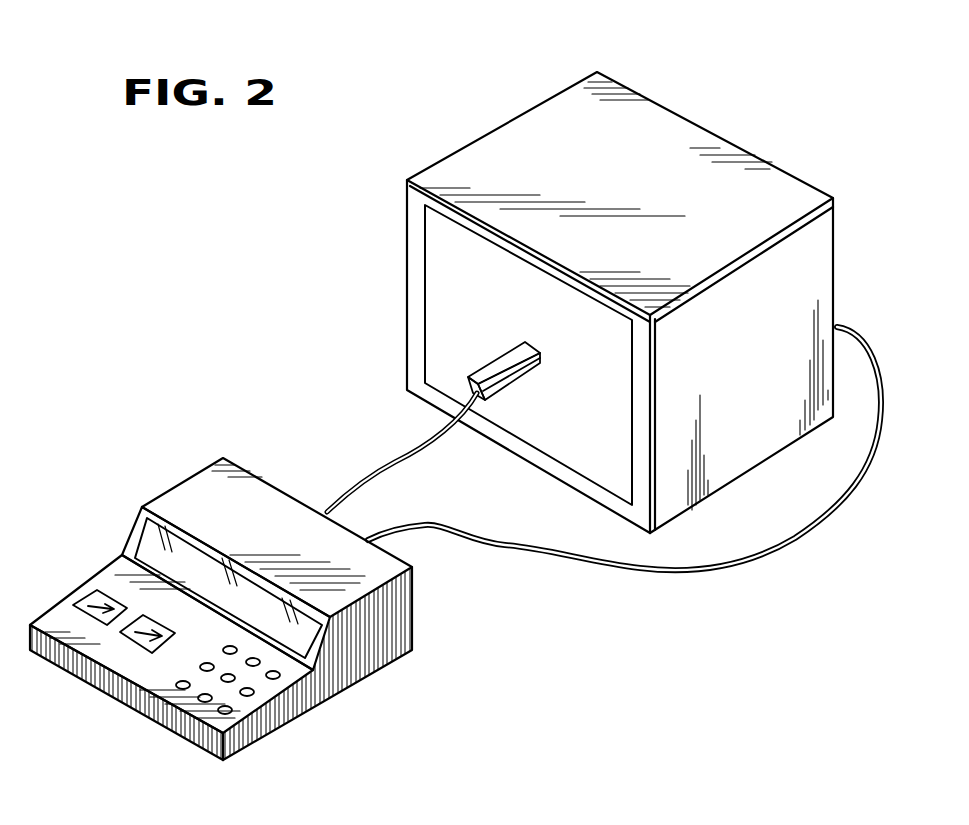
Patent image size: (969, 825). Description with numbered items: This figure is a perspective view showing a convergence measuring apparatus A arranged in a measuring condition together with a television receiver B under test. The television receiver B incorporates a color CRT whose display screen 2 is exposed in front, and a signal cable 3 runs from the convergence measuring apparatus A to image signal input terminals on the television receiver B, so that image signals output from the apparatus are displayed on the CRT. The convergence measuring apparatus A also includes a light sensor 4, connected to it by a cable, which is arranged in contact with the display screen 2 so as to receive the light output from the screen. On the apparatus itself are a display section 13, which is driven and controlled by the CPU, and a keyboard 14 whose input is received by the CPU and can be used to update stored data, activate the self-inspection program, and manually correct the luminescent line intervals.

The television receiver B is at (500, 120).
The convergence measuring apparatus A is at (147, 497).
The display screen 2 is at (450, 290).
The signal cable 3 is at (727, 558).
The light sensor 4 is at (493, 365).
The display section 13 is at (282, 625).
The keyboard 14 is at (262, 683).